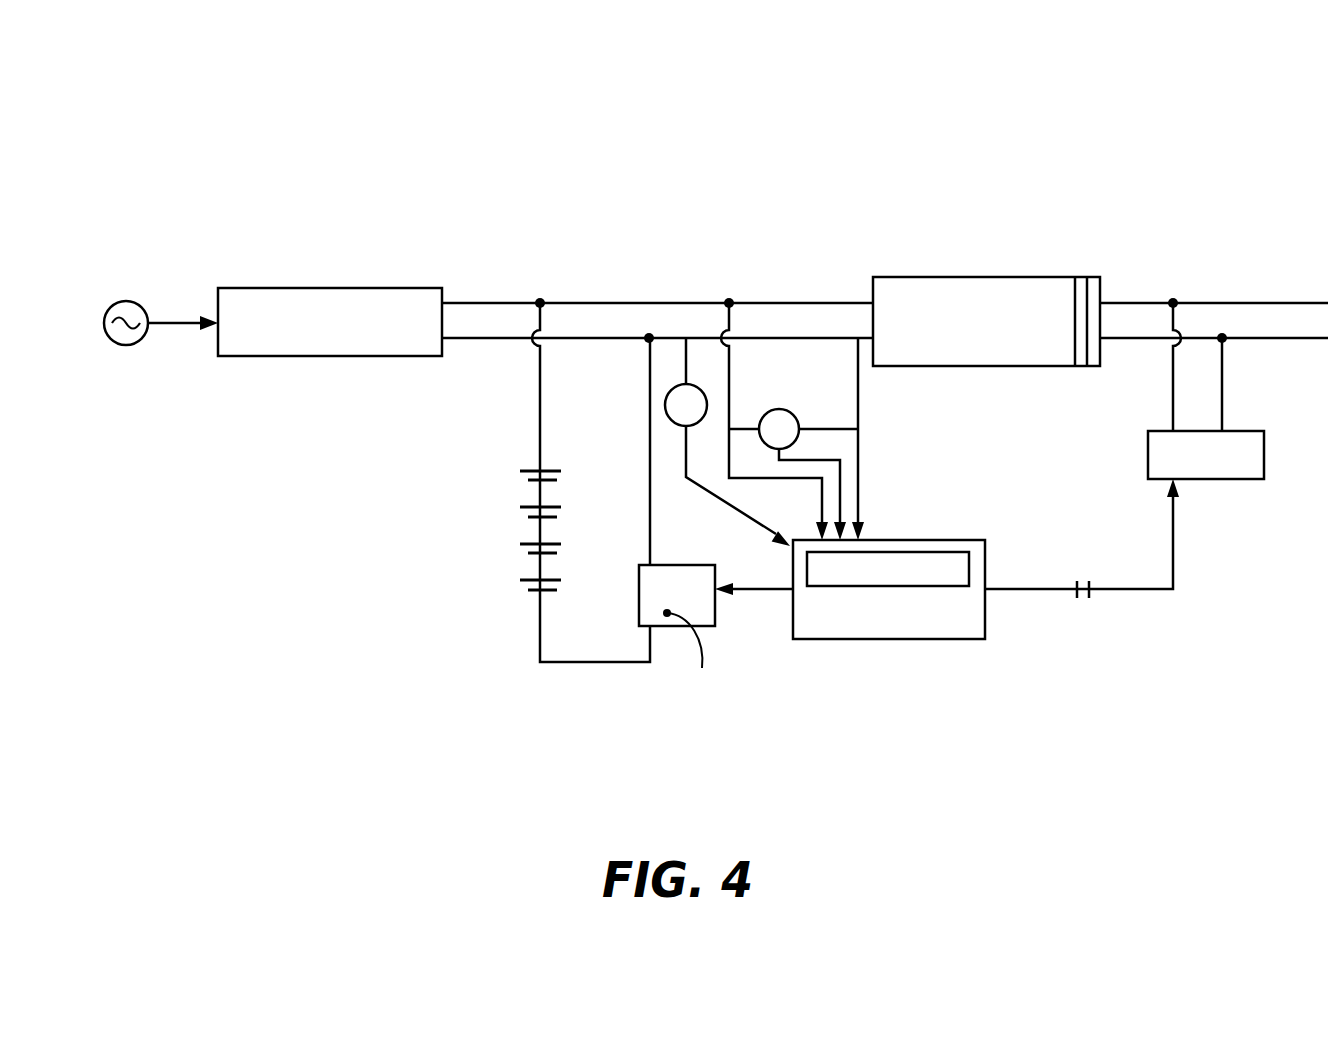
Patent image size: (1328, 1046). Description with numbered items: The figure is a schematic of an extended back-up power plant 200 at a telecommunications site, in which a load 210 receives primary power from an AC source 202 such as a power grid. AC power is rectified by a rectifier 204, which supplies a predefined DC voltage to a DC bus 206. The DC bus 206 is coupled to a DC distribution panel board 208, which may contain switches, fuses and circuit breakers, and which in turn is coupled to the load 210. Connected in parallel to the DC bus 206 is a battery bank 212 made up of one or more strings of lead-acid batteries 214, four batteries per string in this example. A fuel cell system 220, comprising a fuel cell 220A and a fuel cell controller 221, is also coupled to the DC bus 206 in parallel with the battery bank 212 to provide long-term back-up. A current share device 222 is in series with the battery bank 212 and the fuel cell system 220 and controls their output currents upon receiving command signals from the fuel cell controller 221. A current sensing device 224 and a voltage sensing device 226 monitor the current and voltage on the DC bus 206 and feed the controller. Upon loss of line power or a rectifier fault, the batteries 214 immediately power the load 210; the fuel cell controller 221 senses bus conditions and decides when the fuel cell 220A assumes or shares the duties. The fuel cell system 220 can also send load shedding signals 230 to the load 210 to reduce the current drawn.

The extended back-up power plant 200 is at (562, 153).
The AC source 202 is at (126, 345).
The rectifier 204 is at (323, 288).
The DC bus 206 is at (615, 303).
The DC distribution panel board 208 is at (935, 277).
The load 210 is at (1213, 479).
The battery bank 212 is at (448, 564).
The battery 214 is at (533, 470).
The fuel cell system 220 is at (975, 647).
The fuel cell 220A is at (902, 639).
The fuel cell controller 221 is at (903, 552).
The current share device 222 is at (665, 628).
The current sensing device 224 is at (698, 384).
The voltage sensing device 226 is at (776, 409).
The load shedding signals 230 is at (1090, 597).